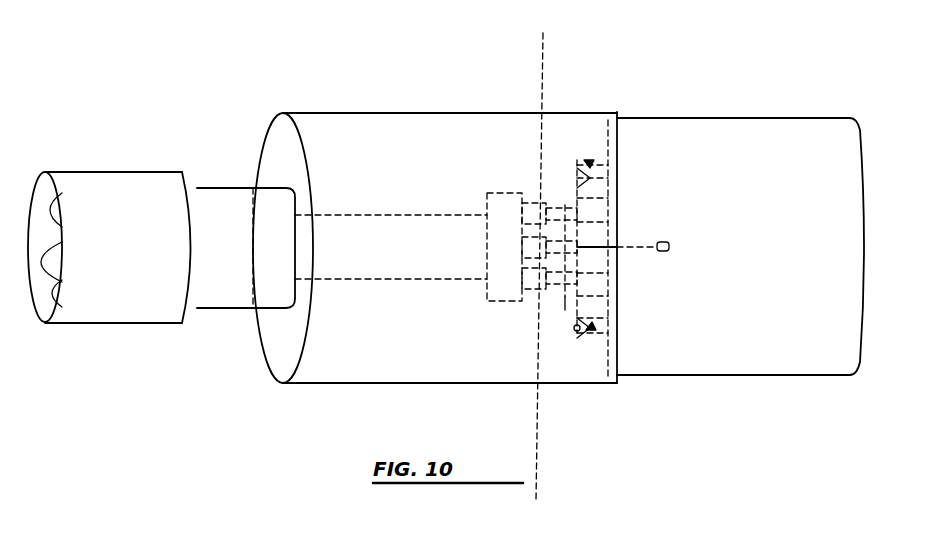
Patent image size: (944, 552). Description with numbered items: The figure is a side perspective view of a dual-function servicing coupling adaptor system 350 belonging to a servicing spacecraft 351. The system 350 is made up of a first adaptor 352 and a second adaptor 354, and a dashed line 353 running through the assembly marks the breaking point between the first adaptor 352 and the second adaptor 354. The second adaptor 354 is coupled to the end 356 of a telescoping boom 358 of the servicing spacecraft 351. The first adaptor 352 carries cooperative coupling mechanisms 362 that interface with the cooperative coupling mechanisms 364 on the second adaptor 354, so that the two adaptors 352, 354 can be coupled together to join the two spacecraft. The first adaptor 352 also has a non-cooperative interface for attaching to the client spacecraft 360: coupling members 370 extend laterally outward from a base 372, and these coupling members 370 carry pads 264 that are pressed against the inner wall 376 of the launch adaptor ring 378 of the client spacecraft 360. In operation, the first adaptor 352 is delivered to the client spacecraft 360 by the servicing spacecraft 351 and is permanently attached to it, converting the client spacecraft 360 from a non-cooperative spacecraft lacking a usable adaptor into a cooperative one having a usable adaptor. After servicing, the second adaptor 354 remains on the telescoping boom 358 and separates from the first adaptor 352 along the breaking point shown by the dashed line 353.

The servicing spacecraft 351 is at (185, 172).
The dual-function servicing coupling adaptor system 350 is at (410, 181).
The dashed line 353 is at (545, 48).
The second adaptor 354 is at (497, 301).
The end 356 is at (403, 215).
The telescoping boom 358 is at (326, 215).
The client spacecraft 360 is at (715, 118).
The cooperative coupling mechanisms 362 is at (558, 200).
The cooperative coupling mechanisms 364 is at (548, 240).
The first adaptor 352 is at (560, 298).
The coupling members 370 is at (606, 178).
The base 372 is at (565, 297).
The inner wall 376 is at (578, 332).
The launch adaptor ring 378 is at (588, 160).
The pads 264 is at (583, 163).